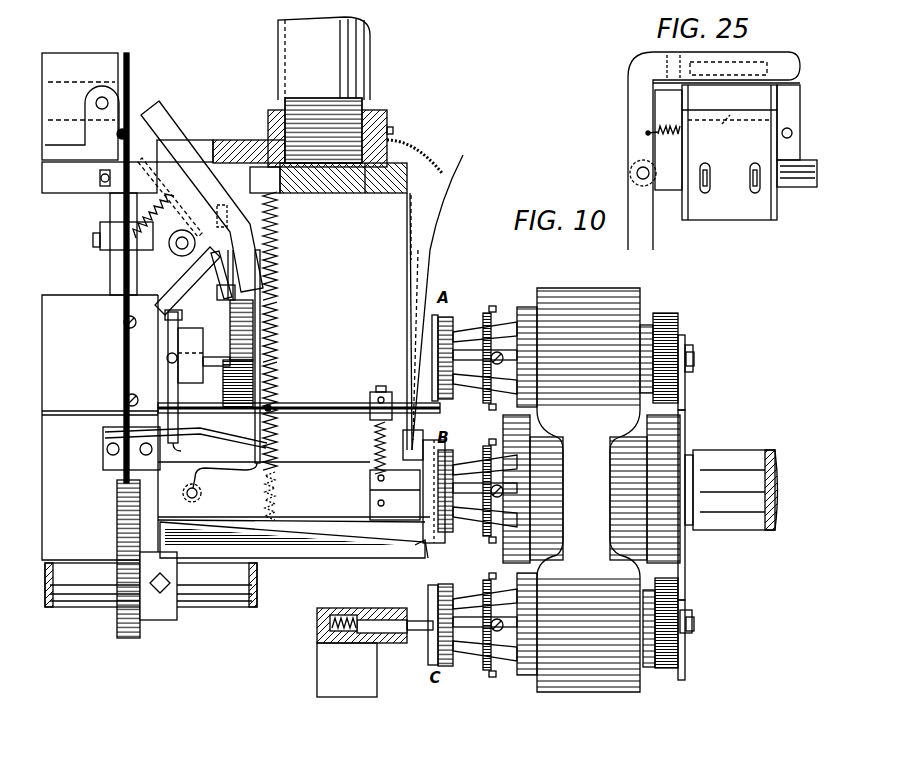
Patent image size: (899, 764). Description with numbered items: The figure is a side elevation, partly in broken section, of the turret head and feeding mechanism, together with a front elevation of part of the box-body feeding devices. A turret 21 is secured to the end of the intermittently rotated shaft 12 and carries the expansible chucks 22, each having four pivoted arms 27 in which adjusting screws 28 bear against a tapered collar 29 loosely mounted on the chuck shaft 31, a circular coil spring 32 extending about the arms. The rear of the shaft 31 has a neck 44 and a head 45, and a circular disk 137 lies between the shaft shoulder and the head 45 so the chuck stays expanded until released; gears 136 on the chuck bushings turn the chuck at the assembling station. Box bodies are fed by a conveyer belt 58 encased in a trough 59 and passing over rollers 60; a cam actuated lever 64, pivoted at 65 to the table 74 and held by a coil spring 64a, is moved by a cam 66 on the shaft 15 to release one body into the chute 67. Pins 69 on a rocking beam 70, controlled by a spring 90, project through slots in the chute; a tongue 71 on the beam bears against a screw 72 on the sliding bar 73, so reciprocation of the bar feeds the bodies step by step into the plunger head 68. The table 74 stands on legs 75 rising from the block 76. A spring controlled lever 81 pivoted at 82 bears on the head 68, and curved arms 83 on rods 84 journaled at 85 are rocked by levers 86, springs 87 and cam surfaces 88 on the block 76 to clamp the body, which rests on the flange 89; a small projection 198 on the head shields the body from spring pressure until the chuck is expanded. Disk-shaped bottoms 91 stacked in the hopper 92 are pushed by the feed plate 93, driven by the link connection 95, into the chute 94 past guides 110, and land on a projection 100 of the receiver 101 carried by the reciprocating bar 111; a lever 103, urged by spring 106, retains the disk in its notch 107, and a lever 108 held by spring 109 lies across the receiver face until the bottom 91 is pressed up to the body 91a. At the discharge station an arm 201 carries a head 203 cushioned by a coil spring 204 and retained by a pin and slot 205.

In FIG. 10, the shaft 12 is at (735, 490).
In FIG. 10, the shaft 15 is at (151, 586).
In FIG. 10, the turret 21 is at (605, 490).
In FIG. 10, the chuck 22 is at (455, 486).
In FIG. 10, the pivoted arm 27 is at (455, 376).
In FIG. 10, the adjusting screw 28 is at (492, 305).
In FIG. 10, the tapered collar 29 is at (500, 338).
In FIG. 10, the shaft 31 is at (694, 359).
In FIG. 10, the circular coil spring 32 is at (488, 452).
In FIG. 10, the neck portion 44 is at (684, 338).
In FIG. 10, the head 45 is at (694, 352).
In FIG. 10, the conveyer belt 58 is at (52, 78).
In FIG. 10, the trough 59 is at (82, 57).
In FIG. 25, the trough 59 is at (796, 79).
In FIG. 10, the roller 60 is at (82, 104).
In FIG. 25, the roller 60 is at (720, 127).
In FIG. 10, the cam actuated lever 64 is at (128, 53).
In FIG. 25, the cam actuated lever 64 is at (795, 52).
In FIG. 10, the coil spring 64a is at (118, 138).
In FIG. 25, the coil spring 64a is at (656, 130).
In FIG. 10, the pivot 65 is at (104, 184).
In FIG. 25, the pivot 65 is at (636, 173).
In FIG. 10, the cam 66 is at (117, 528).
In FIG. 10, the chute 67 is at (170, 118).
In FIG. 25, the chute 67 is at (713, 140).
In FIG. 10, the plunger head 68 is at (276, 383).
In FIG. 10, the pin 69 is at (217, 200).
In FIG. 25, the pin 69 is at (755, 185).
In FIG. 10, the rocking beam 70 is at (214, 275).
In FIG. 10, the tongue 71 is at (187, 272).
In FIG. 10, the screw 72 is at (124, 323).
In FIG. 10, the sliding bar 73 is at (178, 350).
In FIG. 10, the table 74 is at (99, 177).
In FIG. 25, the table 74 is at (797, 136).
In FIG. 10, the leg 75 is at (110, 277).
In FIG. 10, the block 76 is at (101, 427).
In FIG. 10, the spring controlled lever 81 is at (276, 345).
In FIG. 10, the pivot 82 is at (201, 495).
In FIG. 10, the curved arm 83 is at (232, 312).
In FIG. 10, the rod 84 is at (227, 383).
In FIG. 10, the journal 85 is at (168, 360).
In FIG. 10, the lever 86 is at (181, 448).
In FIG. 10, the spring 87 is at (166, 318).
In FIG. 10, the cam surface 88 is at (255, 438).
In FIG. 10, the flange 89 is at (262, 398).
In FIG. 10, the spring 90 is at (132, 219).
In FIG. 10, the bottom 91 is at (370, 103).
In FIG. 10, the body 91a is at (440, 316).
In FIG. 25, the body 91a is at (757, 62).
In FIG. 10, the magazine tube 92 is at (324, 58).
In FIG. 10, the feed plate 93 is at (343, 189).
In FIG. 10, the chute 94 is at (407, 228).
In FIG. 10, the link connection 95 is at (124, 246).
In FIG. 10, the projection 100 is at (400, 432).
In FIG. 10, the receiver 101 is at (436, 508).
In FIG. 10, the lever 103 is at (292, 540).
In FIG. 10, the spring 106 is at (280, 273).
In FIG. 10, the notch 107 is at (418, 552).
In FIG. 10, the lever 108 is at (412, 508).
In FIG. 10, the spring 109 is at (372, 447).
In FIG. 10, the guide 110 is at (460, 160).
In FIG. 10, the reciprocating bar 111 is at (294, 501).
In FIG. 10, the gear 136 is at (665, 312).
In FIG. 10, the circular disk 137 is at (686, 574).
In FIG. 10, the projection 198 is at (270, 412).
In FIG. 10, the arm 201 is at (347, 670).
In FIG. 10, the head 203 is at (428, 648).
In FIG. 10, the coil spring 204 is at (317, 632).
In FIG. 10, the pin and slot 205 is at (380, 610).